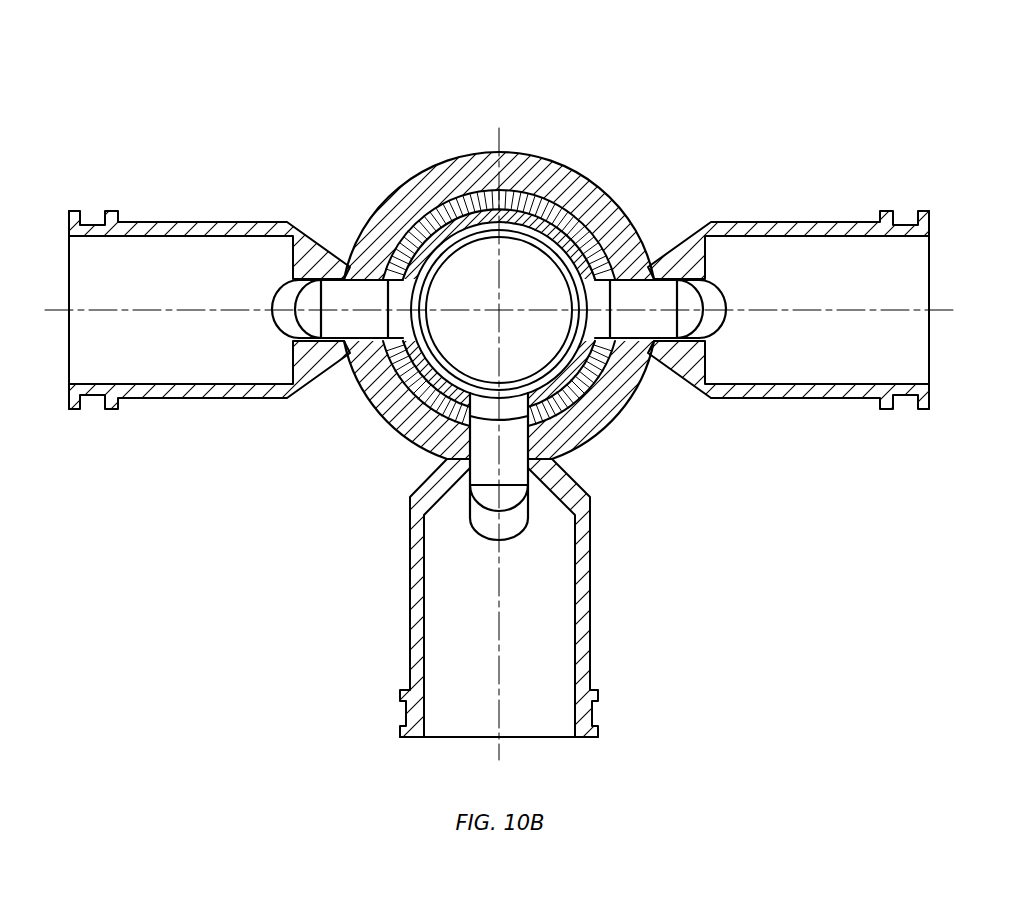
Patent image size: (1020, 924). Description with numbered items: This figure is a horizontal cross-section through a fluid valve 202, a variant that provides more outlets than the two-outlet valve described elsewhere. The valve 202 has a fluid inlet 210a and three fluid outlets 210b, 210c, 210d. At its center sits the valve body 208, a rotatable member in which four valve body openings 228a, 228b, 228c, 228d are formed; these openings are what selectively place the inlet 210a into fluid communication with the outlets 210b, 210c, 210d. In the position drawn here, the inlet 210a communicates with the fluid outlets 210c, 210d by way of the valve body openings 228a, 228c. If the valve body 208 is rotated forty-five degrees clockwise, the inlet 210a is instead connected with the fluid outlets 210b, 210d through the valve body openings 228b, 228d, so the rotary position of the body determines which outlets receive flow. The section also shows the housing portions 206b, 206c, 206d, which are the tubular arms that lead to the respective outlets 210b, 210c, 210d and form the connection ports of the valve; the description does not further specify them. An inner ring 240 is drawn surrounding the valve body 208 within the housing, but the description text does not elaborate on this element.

The valve 202 is at (619, 97).
The valve body 208 is at (530, 218).
The ball liner ring 240 is at (465, 202).
The fluid inlet 210a is at (465, 278).
The fluid outlet 210b is at (340, 292).
The fluid outlet 210c is at (658, 292).
The fluid outlet 210d is at (515, 468).
The valve body opening 228a is at (623, 238).
The valve body opening 228b is at (582, 397).
The valve body opening 228c is at (455, 440).
The valve body opening 228d is at (413, 393).
The second arm connector 206b is at (167, 396).
The third arm connector 206c is at (823, 396).
The fourth arm connector 206d is at (592, 606).